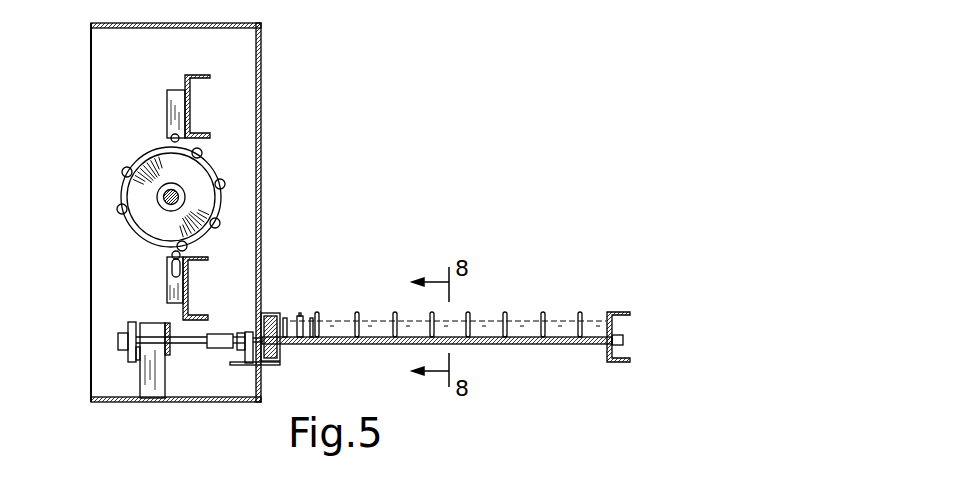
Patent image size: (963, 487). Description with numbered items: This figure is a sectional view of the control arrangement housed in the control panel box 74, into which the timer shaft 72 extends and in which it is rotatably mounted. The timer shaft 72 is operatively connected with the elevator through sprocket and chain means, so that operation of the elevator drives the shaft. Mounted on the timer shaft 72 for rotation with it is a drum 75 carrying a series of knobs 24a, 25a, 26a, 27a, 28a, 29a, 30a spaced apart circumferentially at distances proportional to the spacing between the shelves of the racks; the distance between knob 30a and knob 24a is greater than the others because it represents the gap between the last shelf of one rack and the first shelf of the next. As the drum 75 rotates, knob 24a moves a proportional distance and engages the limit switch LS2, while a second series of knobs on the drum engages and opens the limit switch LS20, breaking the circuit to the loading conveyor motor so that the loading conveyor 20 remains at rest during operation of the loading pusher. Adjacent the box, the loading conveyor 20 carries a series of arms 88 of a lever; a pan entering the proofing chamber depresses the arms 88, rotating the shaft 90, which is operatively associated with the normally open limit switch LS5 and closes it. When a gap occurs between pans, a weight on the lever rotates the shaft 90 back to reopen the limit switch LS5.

The control panel box 74 is at (261, 87).
The limit switch LS20 is at (167, 97).
The knob 24a is at (202, 152).
The drum 75 is at (222, 169).
The knob 25a is at (225, 184).
The knob 26a is at (220, 224).
The knob 27a is at (187, 248).
The knob 28a is at (146, 244).
The knob 29a is at (118, 209).
The knob 30a is at (124, 170).
The timer shaft 72 is at (166, 200).
The limit switch LS2 is at (166, 280).
The limit switch LS5 is at (150, 375).
The arms 88 is at (431, 311).
The loading conveyor 20 is at (445, 327).
The shaft 90 is at (395, 345).